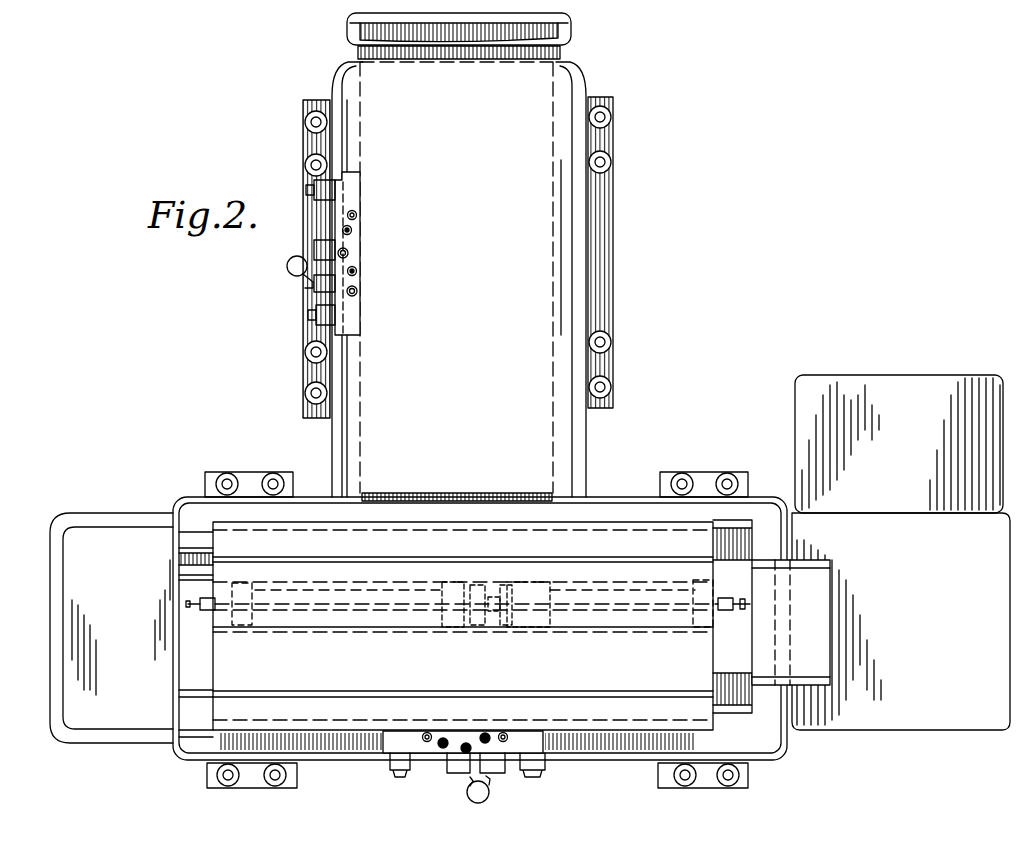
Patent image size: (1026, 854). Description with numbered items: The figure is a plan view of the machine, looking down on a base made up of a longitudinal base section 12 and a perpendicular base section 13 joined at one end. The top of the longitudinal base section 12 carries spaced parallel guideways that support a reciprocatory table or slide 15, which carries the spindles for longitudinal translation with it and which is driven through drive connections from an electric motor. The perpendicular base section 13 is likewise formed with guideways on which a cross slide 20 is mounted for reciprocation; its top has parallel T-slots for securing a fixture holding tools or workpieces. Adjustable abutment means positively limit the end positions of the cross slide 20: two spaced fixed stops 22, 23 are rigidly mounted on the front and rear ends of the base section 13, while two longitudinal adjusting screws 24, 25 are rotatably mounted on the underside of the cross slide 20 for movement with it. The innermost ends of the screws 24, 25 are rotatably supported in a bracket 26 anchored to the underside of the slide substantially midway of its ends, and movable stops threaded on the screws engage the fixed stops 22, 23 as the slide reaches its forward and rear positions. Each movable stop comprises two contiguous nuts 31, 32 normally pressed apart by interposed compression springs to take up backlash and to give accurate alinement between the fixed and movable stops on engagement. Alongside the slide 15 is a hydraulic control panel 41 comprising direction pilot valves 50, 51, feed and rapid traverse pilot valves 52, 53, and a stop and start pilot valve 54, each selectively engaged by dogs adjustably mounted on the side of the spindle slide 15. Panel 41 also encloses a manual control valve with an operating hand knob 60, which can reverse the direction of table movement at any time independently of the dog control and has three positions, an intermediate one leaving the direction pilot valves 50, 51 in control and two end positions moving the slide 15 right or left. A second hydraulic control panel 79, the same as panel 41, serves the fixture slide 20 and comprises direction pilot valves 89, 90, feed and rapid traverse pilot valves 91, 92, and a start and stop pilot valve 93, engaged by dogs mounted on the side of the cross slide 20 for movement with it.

The longitudinal base section 12 is at (590, 441).
The perpendicular base section 13 is at (781, 750).
The reciprocatory table or slide 15 is at (540, 277).
The cross slide 20 is at (628, 735).
The fixed stop 22 is at (245, 580).
The fixed stop 23 is at (540, 586).
The longitudinal adjusting screw 24 is at (290, 606).
The longitudinal adjusting screw 25 is at (630, 602).
The bracket 26 is at (490, 615).
The nut 31 is at (440, 614).
The nut 32 is at (470, 625).
The hydraulic control panel 41 is at (308, 320).
The direction pilot valve 50 is at (362, 213).
The direction pilot valve 51 is at (359, 288).
The feed and rapid traverse pilot valve 52 is at (355, 229).
The feed and rapid traverse pilot valve 53 is at (359, 269).
The stop and start pilot valve 54 is at (352, 252).
The operating hand knob 60 is at (305, 284).
The hydraulic control panel 79 is at (535, 740).
The direction pilot valve 89 is at (425, 732).
The direction pilot valve 90 is at (506, 732).
The feed and rapid traverse pilot valve 91 is at (444, 737).
The feed and rapid traverse pilot valve 92 is at (487, 732).
The start and stop pilot valve 93 is at (467, 742).